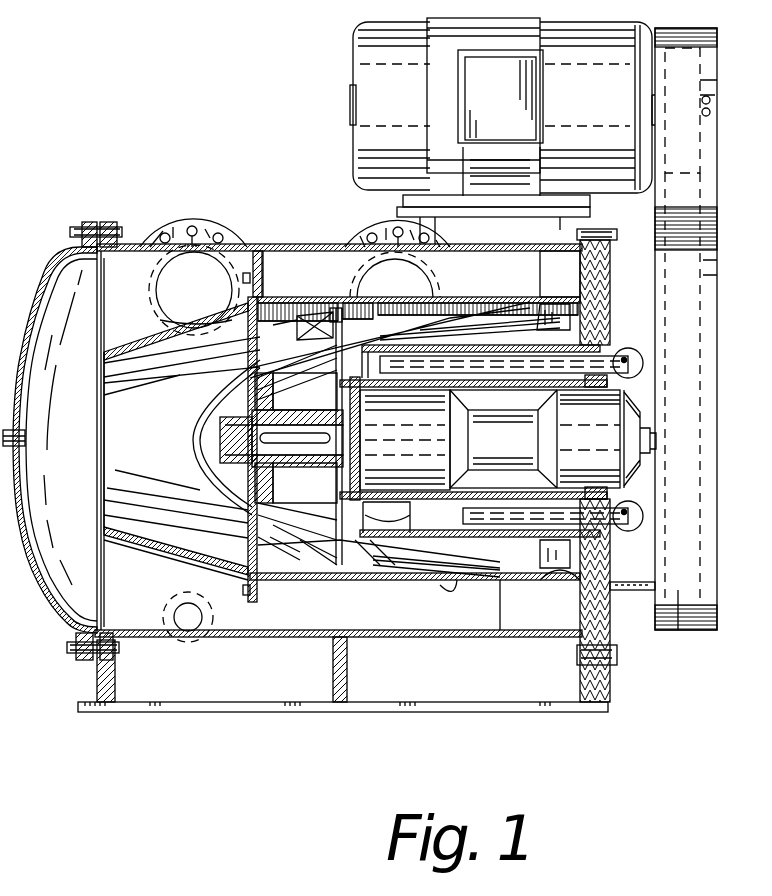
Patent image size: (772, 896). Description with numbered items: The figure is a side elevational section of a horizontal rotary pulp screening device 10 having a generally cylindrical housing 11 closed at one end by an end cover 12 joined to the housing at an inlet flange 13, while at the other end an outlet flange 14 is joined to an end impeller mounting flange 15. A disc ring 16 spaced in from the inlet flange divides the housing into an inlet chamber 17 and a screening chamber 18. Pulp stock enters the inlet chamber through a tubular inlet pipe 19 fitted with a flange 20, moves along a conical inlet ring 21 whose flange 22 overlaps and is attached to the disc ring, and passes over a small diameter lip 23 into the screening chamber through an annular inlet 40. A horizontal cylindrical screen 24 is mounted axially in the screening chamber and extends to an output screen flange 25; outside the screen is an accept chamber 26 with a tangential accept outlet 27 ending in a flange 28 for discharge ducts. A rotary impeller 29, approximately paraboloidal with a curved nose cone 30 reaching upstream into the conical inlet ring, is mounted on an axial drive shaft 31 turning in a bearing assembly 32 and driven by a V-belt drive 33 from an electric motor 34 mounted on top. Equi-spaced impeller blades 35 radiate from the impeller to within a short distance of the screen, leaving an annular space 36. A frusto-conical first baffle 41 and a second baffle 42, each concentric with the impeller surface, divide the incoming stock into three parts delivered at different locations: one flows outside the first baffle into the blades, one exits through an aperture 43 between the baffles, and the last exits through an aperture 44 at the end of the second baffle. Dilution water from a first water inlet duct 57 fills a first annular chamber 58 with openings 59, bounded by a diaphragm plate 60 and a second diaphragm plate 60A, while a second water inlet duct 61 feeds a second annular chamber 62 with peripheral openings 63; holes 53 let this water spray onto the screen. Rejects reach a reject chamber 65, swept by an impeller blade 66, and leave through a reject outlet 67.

The pulp screening device 10 is at (263, 242).
The cylindrical housing 11 is at (500, 645).
The end cover 12 is at (48, 600).
The inlet flange 13 is at (85, 221).
The outlet flange 14 is at (583, 252).
The end impeller mounting flange 15 is at (611, 618).
The disc ring 16 is at (253, 622).
The inlet chamber 17 is at (131, 266).
The screening chamber 18 is at (507, 618).
The tubular inlet pipe 19 is at (157, 284).
The flange 20 is at (188, 240).
The conical inlet ring 21 is at (150, 545).
The flange 22 is at (246, 578).
The small diameter lip 23 is at (104, 529).
The horizontal cylindrical screen 24 is at (273, 582).
The output screen flange 25 is at (520, 612).
The accept chamber 26 is at (400, 642).
The accept outlet 27 is at (357, 296).
The flange 28 is at (378, 236).
The rotary impeller 29 is at (190, 327).
The curved nose cone 30 is at (193, 448).
The axial drive shaft 31 is at (323, 452).
The bearing assembly 32 is at (437, 432).
The V-belt drive 33 is at (677, 600).
The electric motor 34 is at (372, 73).
The impeller blades 35 is at (358, 615).
The annular space 36 is at (378, 576).
The annular inlet 40 is at (200, 548).
The first baffle 41 is at (292, 575).
The second baffle 42 is at (340, 345).
The aperture 43 is at (325, 576).
The aperture 44 is at (395, 578).
The holes 53 is at (400, 300).
The first water inlet duct 57 is at (622, 351).
The first annular chamber 58 is at (393, 373).
The openings 59 is at (448, 322).
The diaphragm plate 60 is at (332, 392).
The second diaphragm plate 60A is at (225, 488).
The second water inlet duct 61 is at (629, 523).
The second annular chamber 62 is at (472, 340).
The peripheral openings 63 is at (503, 338).
The reject chamber 65 is at (565, 546).
The impeller blade 66 is at (558, 310).
The reject outlet 67 is at (557, 575).